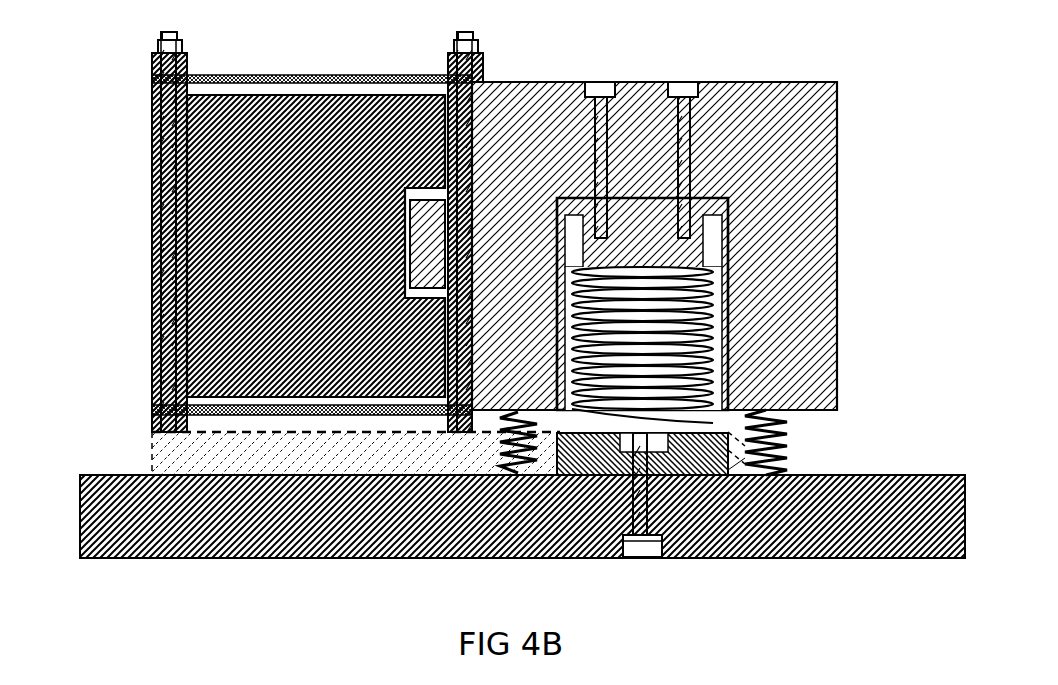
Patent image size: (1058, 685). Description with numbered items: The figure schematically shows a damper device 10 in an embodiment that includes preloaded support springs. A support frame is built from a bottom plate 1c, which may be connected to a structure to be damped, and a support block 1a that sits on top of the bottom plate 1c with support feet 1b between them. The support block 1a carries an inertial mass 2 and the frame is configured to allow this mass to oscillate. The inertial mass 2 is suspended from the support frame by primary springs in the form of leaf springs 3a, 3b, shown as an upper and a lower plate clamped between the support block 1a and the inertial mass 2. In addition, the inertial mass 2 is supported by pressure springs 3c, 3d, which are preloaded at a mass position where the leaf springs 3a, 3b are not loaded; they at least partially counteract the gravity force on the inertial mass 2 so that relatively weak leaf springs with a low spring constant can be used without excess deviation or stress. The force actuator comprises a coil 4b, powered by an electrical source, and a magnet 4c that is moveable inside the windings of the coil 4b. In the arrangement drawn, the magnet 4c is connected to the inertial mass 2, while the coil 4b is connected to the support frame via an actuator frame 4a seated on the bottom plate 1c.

The damper device 10 is at (113, 91).
The support block 1a is at (250, 215).
The support feet 1b is at (195, 458).
The bottom plate 1c is at (130, 500).
The inertial mass 2 is at (790, 162).
The primary spring 3a is at (318, 70).
The primary spring 3b is at (320, 418).
The support spring 3c is at (496, 447).
The support spring 3d is at (792, 446).
The actuator frame 4a is at (690, 455).
The coil 4b is at (717, 366).
The magnet 4c is at (658, 276).